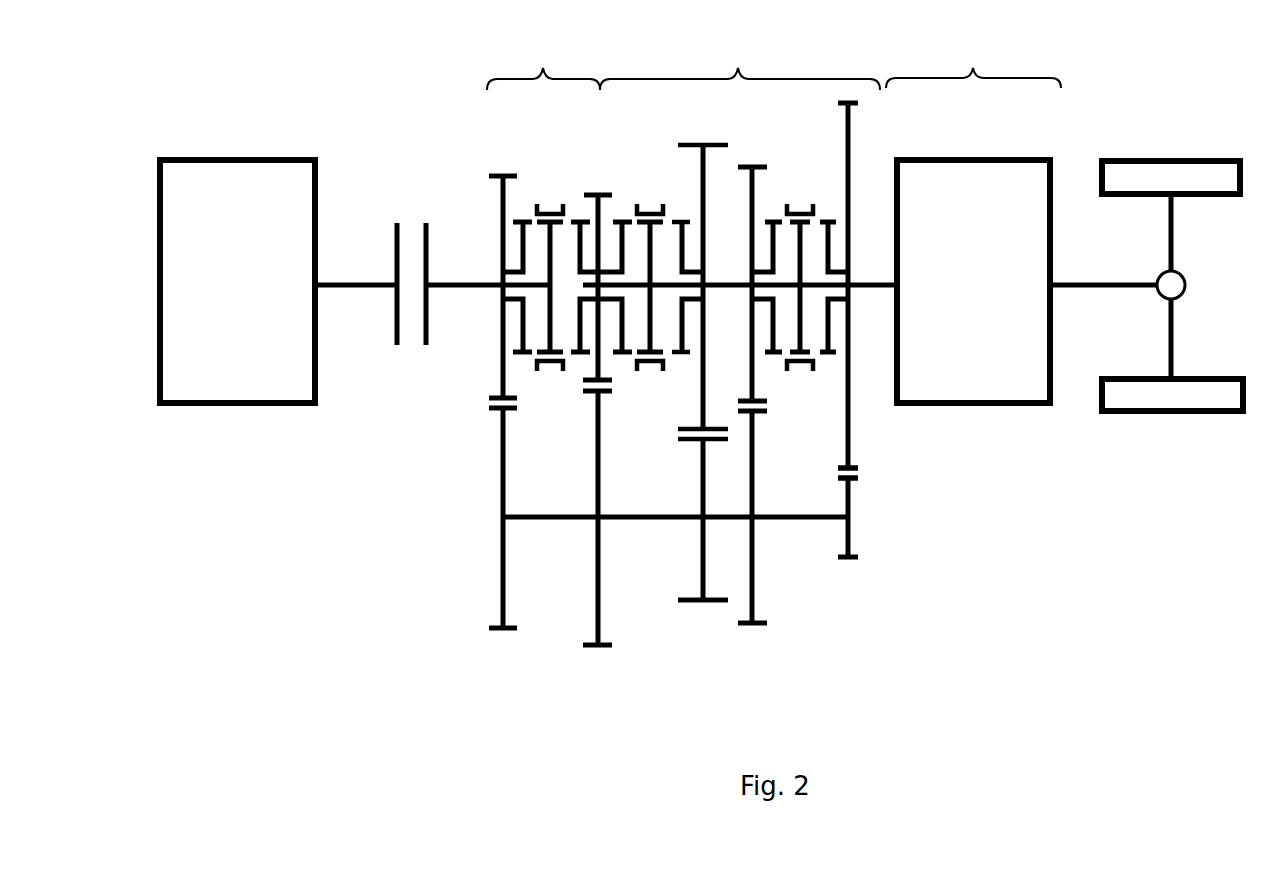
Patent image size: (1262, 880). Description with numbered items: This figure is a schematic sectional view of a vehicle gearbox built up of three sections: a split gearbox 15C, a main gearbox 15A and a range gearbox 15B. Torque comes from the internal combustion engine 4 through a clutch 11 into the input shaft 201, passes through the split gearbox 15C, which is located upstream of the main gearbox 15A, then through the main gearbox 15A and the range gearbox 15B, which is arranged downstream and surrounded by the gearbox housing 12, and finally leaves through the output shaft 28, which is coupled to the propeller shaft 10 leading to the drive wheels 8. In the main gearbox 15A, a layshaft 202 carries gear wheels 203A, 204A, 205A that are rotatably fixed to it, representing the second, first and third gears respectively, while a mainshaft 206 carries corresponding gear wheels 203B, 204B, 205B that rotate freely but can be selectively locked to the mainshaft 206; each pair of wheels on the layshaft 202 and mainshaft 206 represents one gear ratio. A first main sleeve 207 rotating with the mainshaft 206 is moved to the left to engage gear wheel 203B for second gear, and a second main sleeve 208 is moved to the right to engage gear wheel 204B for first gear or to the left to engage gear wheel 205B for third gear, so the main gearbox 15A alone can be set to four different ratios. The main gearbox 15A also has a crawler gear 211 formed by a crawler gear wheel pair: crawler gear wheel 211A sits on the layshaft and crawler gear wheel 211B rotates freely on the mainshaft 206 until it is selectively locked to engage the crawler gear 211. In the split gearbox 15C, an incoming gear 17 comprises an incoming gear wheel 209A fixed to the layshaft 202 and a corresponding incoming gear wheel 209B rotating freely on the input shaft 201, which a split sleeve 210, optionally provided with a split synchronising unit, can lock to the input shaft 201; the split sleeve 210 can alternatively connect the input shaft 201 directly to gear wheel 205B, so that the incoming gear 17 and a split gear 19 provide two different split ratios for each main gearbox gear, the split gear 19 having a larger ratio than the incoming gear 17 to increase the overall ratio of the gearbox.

The internal combustion engine 4 is at (230, 403).
The drive wheels 8 is at (1154, 161).
The propeller shaft 10 is at (1081, 284).
The clutch 11 is at (428, 312).
The gearbox housing 12 is at (1050, 403).
The main gearbox 15A is at (740, 53).
The range gearbox 15B is at (973, 56).
The split gearbox 15C is at (543, 53).
The incoming gear 17 is at (480, 657).
The split gear 19 is at (610, 658).
The output shaft 28 is at (1074, 288).
The input shaft 201 is at (462, 278).
The layshaft 202 is at (533, 522).
The gear wheel 203A is at (755, 533).
The gear wheel 203B is at (748, 166).
The gear wheel 204A is at (703, 553).
The gear wheel 204B is at (698, 143).
The gear wheel 205A is at (598, 560).
The gear wheel 205B is at (594, 194).
The mainshaft 206 is at (737, 290).
The first main sleeve 207 is at (802, 205).
The second main sleeve 208 is at (655, 203).
The incoming gear wheel 209A is at (507, 573).
The incoming gear wheel 209B is at (502, 212).
The split sleeve 210 is at (550, 204).
The crawler gear 211 is at (880, 486).
The crawler gear wheel 211A is at (850, 533).
The crawler gear wheel 211B is at (850, 162).